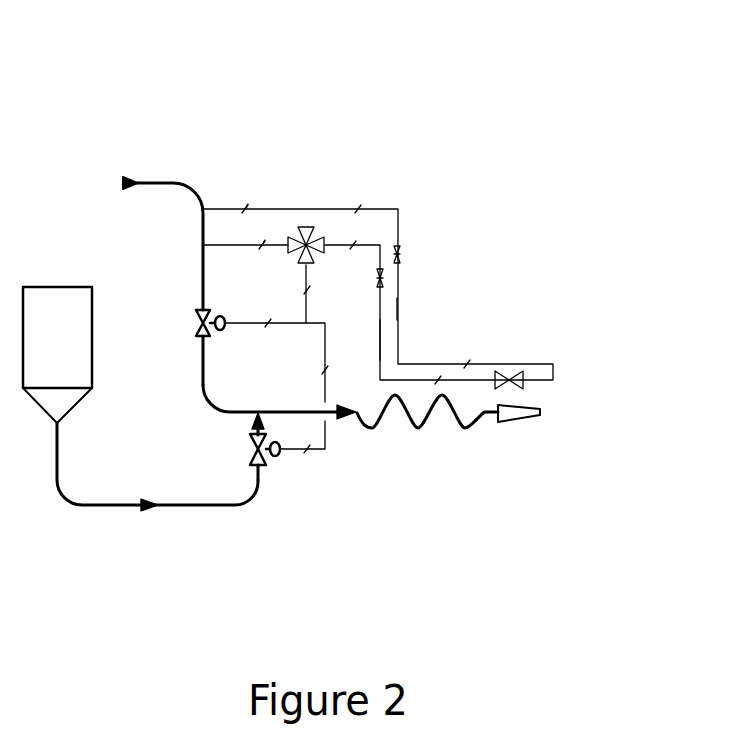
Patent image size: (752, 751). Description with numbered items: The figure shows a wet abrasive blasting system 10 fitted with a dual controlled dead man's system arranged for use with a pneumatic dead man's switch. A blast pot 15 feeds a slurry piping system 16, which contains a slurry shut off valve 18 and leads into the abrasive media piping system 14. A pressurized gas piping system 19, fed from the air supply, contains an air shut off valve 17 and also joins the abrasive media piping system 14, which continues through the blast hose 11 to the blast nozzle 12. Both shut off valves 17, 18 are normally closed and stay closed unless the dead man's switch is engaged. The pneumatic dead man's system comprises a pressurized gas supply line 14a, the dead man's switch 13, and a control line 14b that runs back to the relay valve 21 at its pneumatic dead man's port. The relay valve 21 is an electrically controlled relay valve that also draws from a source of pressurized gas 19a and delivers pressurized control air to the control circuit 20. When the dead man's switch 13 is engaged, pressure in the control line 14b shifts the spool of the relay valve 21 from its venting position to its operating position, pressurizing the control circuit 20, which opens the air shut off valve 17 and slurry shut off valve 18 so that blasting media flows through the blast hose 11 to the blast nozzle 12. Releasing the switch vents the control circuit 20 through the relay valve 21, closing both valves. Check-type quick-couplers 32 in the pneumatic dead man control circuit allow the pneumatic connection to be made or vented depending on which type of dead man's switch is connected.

The dispensing system 10 is at (397, 98).
The blast hose 11 is at (450, 413).
The blast nozzle 12 is at (522, 420).
The dead man's switch 13 is at (506, 373).
The abrasive media piping system 14 is at (297, 415).
The pressurized gas supply line 14a is at (398, 297).
The control line 14b is at (381, 360).
The blast pot 15 is at (57, 355).
The slurry piping system 16 is at (113, 508).
The air shut off valve 17 is at (228, 321).
The slurry shut off valve 18 is at (285, 454).
The pressurized gas piping system 19 is at (203, 228).
The source of pressurized gas 19a is at (235, 245).
The control circuit 20 is at (317, 320).
The relay valve 21 is at (318, 236).
The check-type quick-couplers 32 is at (403, 252).